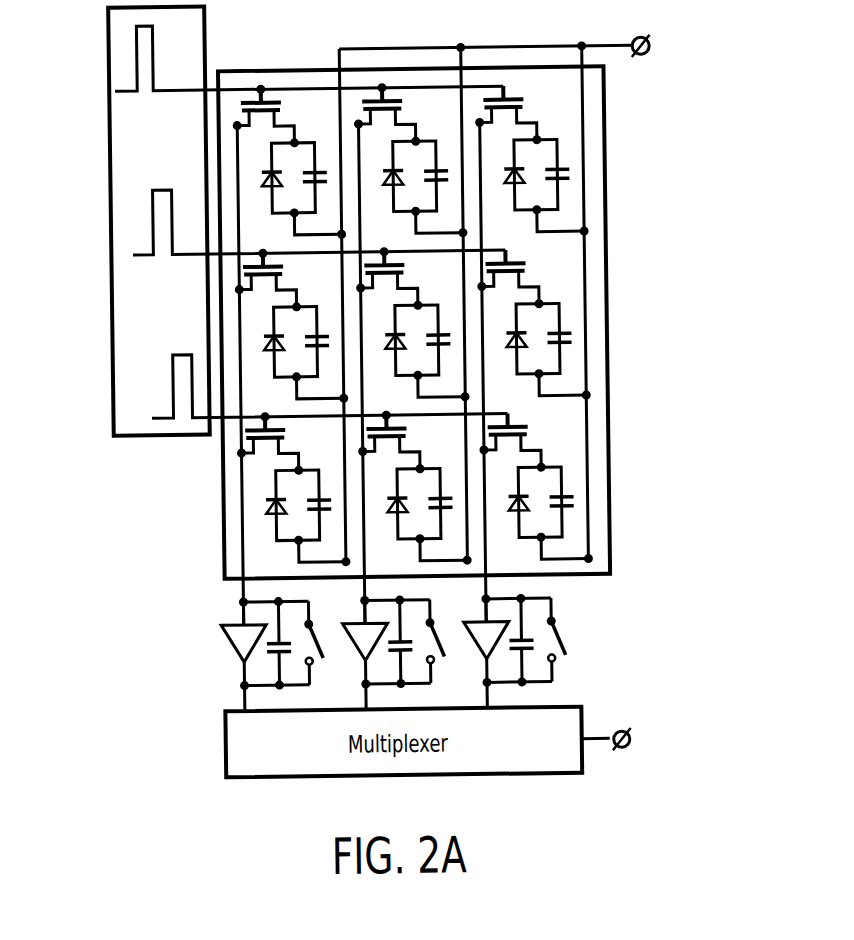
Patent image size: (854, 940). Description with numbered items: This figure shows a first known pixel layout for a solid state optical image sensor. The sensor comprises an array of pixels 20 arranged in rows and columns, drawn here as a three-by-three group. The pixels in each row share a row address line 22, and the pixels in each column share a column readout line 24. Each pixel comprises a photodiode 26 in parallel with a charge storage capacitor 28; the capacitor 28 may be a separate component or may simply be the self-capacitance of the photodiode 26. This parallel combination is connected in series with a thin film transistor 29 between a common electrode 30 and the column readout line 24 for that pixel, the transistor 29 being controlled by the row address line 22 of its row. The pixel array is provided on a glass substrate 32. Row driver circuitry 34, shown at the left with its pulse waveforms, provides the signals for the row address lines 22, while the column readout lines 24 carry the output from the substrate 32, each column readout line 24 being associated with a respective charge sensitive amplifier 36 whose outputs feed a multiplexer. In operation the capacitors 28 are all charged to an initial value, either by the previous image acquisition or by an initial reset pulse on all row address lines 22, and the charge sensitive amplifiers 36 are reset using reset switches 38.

The pixel 20 is at (423, 114).
The row address line 22 is at (295, 87).
The column readout line 24 is at (238, 475).
The photodiode 26 is at (264, 506).
The charge storage capacitor 28 is at (570, 500).
The thin film transistor 29 is at (526, 437).
The common electrode 30 is at (653, 51).
The glass substrate 32 is at (606, 206).
The row driver circuitry 34 is at (112, 19).
The charge sensitive amplifier 36 is at (573, 650).
The reset switch 38 is at (558, 645).